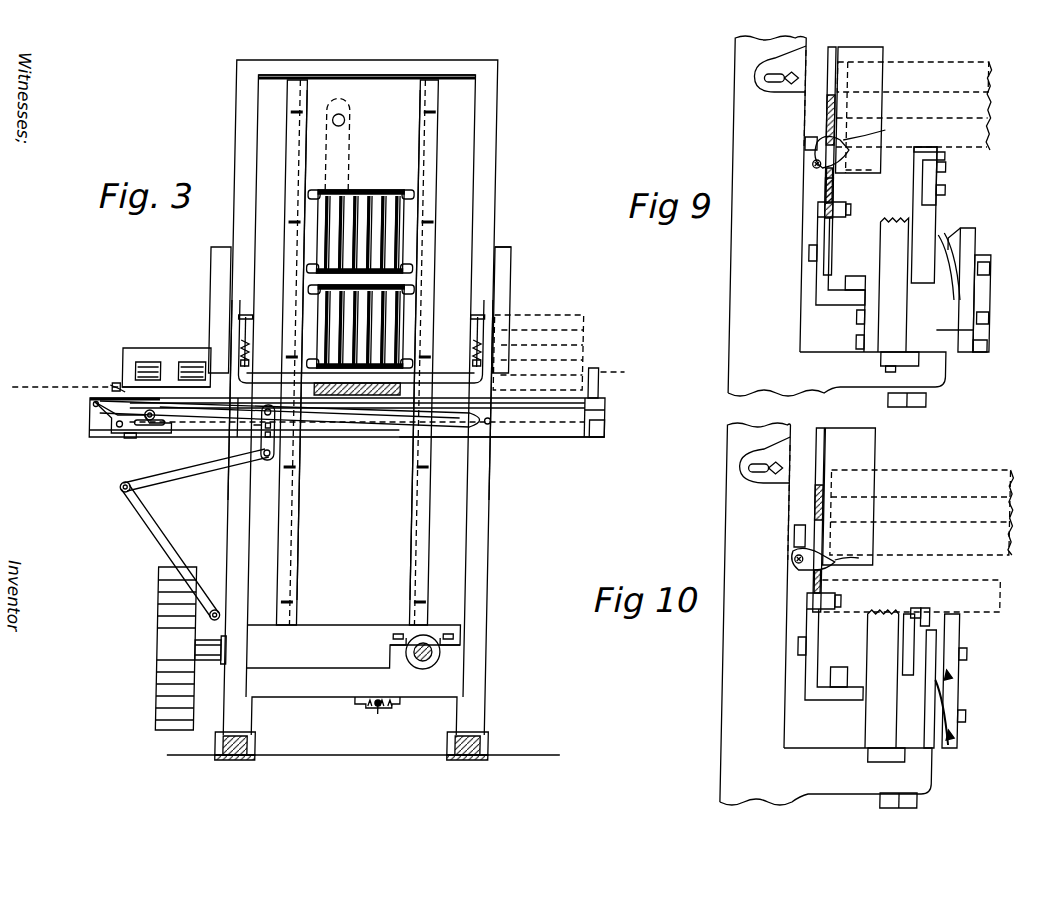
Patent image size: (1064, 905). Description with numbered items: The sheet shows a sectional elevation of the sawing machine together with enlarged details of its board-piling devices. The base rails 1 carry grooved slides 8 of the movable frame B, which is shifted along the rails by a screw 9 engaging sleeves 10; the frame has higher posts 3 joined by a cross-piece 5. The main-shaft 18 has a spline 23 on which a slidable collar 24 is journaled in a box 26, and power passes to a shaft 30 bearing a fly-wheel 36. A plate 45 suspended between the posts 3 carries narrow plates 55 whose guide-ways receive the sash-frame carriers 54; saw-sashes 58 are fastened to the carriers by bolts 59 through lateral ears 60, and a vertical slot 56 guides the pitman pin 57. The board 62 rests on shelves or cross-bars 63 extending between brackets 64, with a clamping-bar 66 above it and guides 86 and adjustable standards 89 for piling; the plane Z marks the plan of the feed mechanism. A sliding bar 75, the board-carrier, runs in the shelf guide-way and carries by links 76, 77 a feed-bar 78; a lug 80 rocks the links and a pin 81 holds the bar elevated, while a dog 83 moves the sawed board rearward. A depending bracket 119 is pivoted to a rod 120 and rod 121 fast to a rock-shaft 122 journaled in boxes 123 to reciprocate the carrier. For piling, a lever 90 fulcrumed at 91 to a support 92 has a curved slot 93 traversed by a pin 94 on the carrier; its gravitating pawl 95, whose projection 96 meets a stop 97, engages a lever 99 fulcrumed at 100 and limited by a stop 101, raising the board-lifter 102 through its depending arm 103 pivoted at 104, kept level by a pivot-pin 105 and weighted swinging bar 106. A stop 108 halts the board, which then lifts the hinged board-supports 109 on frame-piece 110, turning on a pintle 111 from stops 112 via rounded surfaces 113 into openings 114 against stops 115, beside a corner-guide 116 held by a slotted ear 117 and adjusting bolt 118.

In FIG. 3, the rails 1 is at (243, 757).
In FIG. 3, the higher posts 3 is at (232, 97).
In FIG. 9, the higher posts 3 is at (728, 305).
In FIG. 10, the higher posts 3 is at (728, 752).
In FIG. 3, the cross-piece 5 is at (463, 60).
In FIG. 3, the grooved slides 8 is at (264, 750).
In FIG. 3, the screw 9 is at (384, 714).
In FIG. 3, the sleeves 10 is at (372, 712).
In FIG. 3, the main-shaft 18 is at (445, 658).
In FIG. 3, the spline 23 is at (448, 652).
In FIG. 3, the slidable collar 24 is at (430, 665).
In FIG. 3, the box 26 is at (462, 630).
In FIG. 3, the shaft 30 is at (198, 652).
In FIG. 3, the fly-wheel 36 is at (160, 703).
In FIG. 3, the plate 45 is at (475, 95).
In FIG. 3, the sash-frame carriers 54 is at (455, 142).
In FIG. 3, the narrow plates 55 is at (283, 120).
In FIG. 3, the vertical slot 56 is at (334, 100).
In FIG. 3, the pitman pin 57 is at (340, 118).
In FIG. 3, the saw-sashes 58 is at (316, 215).
In FIG. 3, the bolts 59 is at (313, 195).
In FIG. 3, the lateral ears 60 is at (368, 254).
In FIG. 3, the board 62 is at (582, 326).
In FIG. 3, the shelves or cross-bars 63 is at (287, 386).
In FIG. 9, the shelves or cross-bars 63 is at (891, 246).
In FIG. 10, the shelves or cross-bars 63 is at (872, 740).
In FIG. 3, the brackets 64 is at (500, 433).
In FIG. 9, the brackets 64 is at (945, 392).
In FIG. 10, the brackets 64 is at (938, 787).
In FIG. 3, the clamping-bar 66 is at (448, 378).
In FIG. 3, the sliding bar 75 is at (598, 434).
In FIG. 3, the link 76 is at (410, 416).
In FIG. 3, the link 77 is at (606, 411).
In FIG. 3, the bar 78 is at (584, 399).
In FIG. 3, the lug 80 is at (606, 428).
In FIG. 3, the pin 81 is at (380, 410).
In FIG. 3, the dog 83 is at (244, 340).
In FIG. 3, the vertical standards or guides 86 is at (510, 253).
In FIG. 3, the adjustable standards 89 is at (593, 368).
In FIG. 3, the lever 90 is at (470, 424).
In FIG. 9, the lever 90 is at (972, 235).
In FIG. 10, the lever 90 is at (964, 630).
In FIG. 9, the fulcrum 91 is at (987, 268).
In FIG. 3, the support 92 is at (282, 422).
In FIG. 9, the support 92 is at (988, 290).
In FIG. 3, the curved slot 93 is at (440, 430).
In FIG. 3, the pin 94 is at (290, 427).
In FIG. 9, the pin 94 is at (955, 256).
In FIG. 10, the pin 94 is at (965, 656).
In FIG. 3, the gravitating pawl 95 is at (150, 426).
In FIG. 9, the rearward projection 96 is at (987, 318).
In FIG. 3, the stop 97 is at (127, 437).
In FIG. 9, the stop 97 is at (920, 360).
In FIG. 10, the stop 97 is at (912, 756).
In FIG. 3, the lever 99 is at (110, 418).
In FIG. 9, the lever 99 is at (933, 213).
In FIG. 10, the lever 99 is at (945, 690).
In FIG. 9, the fulcrum 100 is at (958, 232).
In FIG. 3, the stop 101 is at (118, 426).
In FIG. 9, the stop 101 is at (950, 330).
In FIG. 3, the horizontal bar 102 is at (92, 399).
In FIG. 9, the horizontal bar 102 is at (925, 148).
In FIG. 9, the depending arm 103 is at (930, 170).
In FIG. 10, the depending arm 103 is at (908, 632).
In FIG. 3, the pivot 104 is at (94, 404).
In FIG. 9, the pivot 104 is at (942, 190).
In FIG. 9, the pivot-pin 105 is at (942, 166).
In FIG. 10, the pivot-pin 105 is at (937, 613).
In FIG. 3, the weighted swinging bar 106 is at (155, 418).
In FIG. 9, the weighted swinging bar 106 is at (940, 156).
In FIG. 10, the weighted swinging bar 106 is at (919, 618).
In FIG. 3, the stop 108 is at (112, 387).
In FIG. 9, the stop 108 is at (814, 208).
In FIG. 10, the stop 108 is at (811, 601).
In FIG. 3, the board-supports 109 is at (131, 380).
In FIG. 9, the board-supports 109 is at (818, 150).
In FIG. 10, the board-supports 109 is at (816, 566).
In FIG. 3, the frame-piece 110 is at (166, 348).
In FIG. 9, the frame-piece 110 is at (822, 230).
In FIG. 10, the frame-piece 110 is at (812, 667).
In FIG. 3, the pintle 111 is at (125, 386).
In FIG. 9, the pintle 111 is at (810, 166).
In FIG. 10, the pintle 111 is at (798, 559).
In FIG. 9, the stops 112 is at (822, 180).
In FIG. 10, the stops 112 is at (818, 585).
In FIG. 9, the rounded or beveled surfaces 113 is at (842, 150).
In FIG. 10, the rounded or beveled surfaces 113 is at (862, 570).
In FIG. 3, the openings 114 is at (146, 362).
In FIG. 9, the openings 114 is at (821, 128).
In FIG. 10, the openings 114 is at (817, 521).
In FIG. 3, the stops 115 is at (137, 372).
In FIG. 9, the stops 115 is at (800, 140).
In FIG. 10, the stops 115 is at (797, 535).
In FIG. 3, the adjustable corner-guide 116 is at (208, 270).
In FIG. 9, the adjustable corner-guide 116 is at (884, 78).
In FIG. 10, the adjustable corner-guide 116 is at (866, 448).
In FIG. 9, the slotted ear 117 is at (770, 63).
In FIG. 10, the slotted ear 117 is at (770, 446).
In FIG. 9, the adjusting bolt 118 is at (760, 78).
In FIG. 10, the adjusting bolt 118 is at (752, 470).
In FIG. 3, the depending bracket 119 is at (280, 450).
In FIG. 3, the rod 120 is at (130, 482).
In FIG. 3, the rod 121 is at (152, 522).
In FIG. 3, the rock-shaft 122 is at (214, 613).
In FIG. 3, the boxes 123 is at (222, 622).
In FIG. 3, the movable frame B is at (367, 55).
In FIG. 3, the section line z—z Z is at (319, 374).